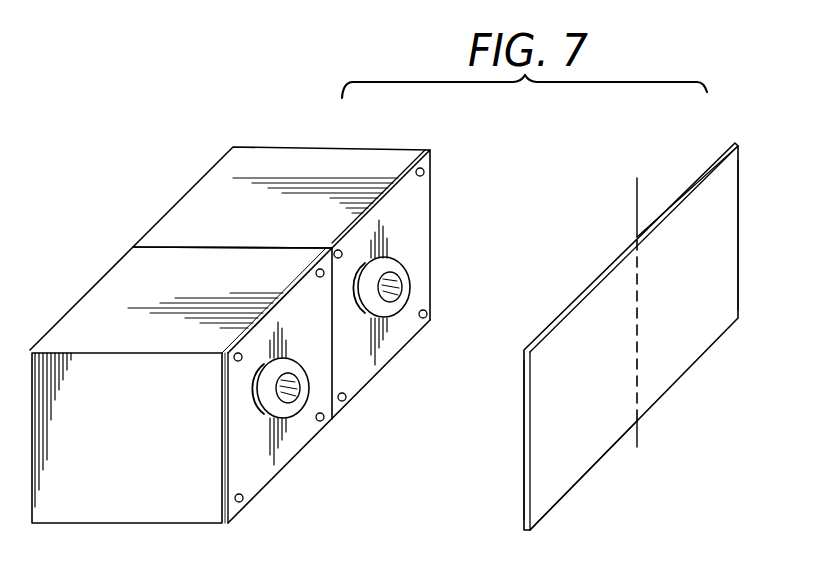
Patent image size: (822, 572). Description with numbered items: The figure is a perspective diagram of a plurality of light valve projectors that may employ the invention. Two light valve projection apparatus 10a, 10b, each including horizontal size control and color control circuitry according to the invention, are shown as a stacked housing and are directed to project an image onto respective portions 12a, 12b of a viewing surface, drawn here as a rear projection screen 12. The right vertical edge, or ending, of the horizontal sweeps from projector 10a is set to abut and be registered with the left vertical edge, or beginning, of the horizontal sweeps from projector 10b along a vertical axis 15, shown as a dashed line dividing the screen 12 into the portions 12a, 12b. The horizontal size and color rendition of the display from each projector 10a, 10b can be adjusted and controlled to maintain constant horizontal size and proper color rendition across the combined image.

The light valve projection apparatus 10a is at (177, 215).
The light valve projection apparatus 10b is at (85, 315).
The rear projection screen 12 is at (738, 177).
The portion of viewing surface 12a is at (710, 292).
The portion of viewing surface 12b is at (588, 427).
The vertical axis 15 is at (638, 352).